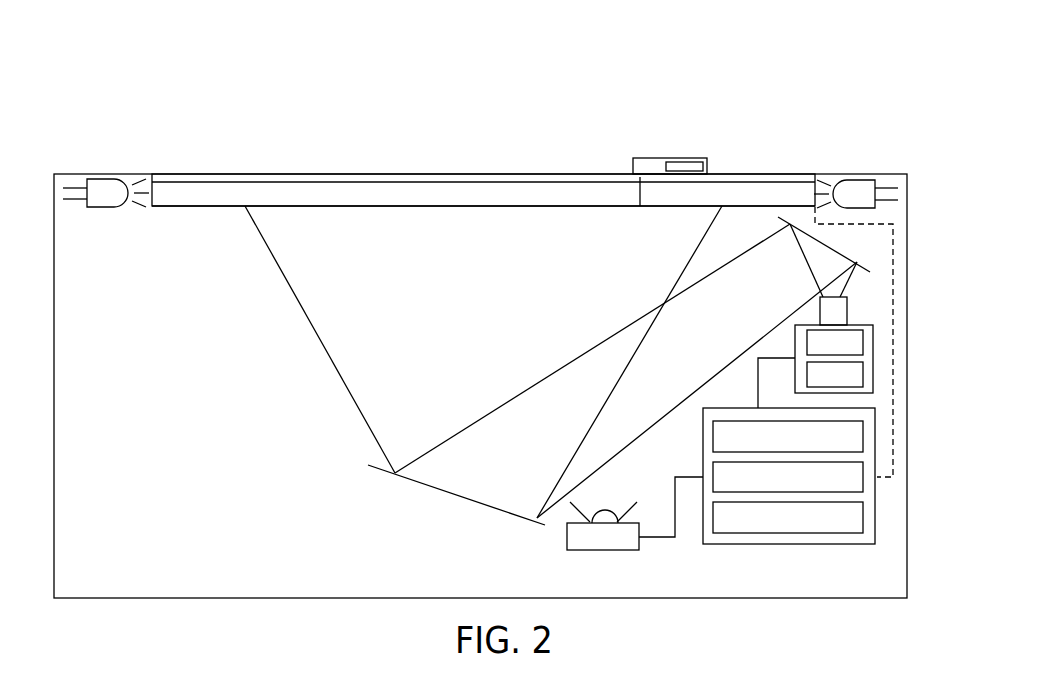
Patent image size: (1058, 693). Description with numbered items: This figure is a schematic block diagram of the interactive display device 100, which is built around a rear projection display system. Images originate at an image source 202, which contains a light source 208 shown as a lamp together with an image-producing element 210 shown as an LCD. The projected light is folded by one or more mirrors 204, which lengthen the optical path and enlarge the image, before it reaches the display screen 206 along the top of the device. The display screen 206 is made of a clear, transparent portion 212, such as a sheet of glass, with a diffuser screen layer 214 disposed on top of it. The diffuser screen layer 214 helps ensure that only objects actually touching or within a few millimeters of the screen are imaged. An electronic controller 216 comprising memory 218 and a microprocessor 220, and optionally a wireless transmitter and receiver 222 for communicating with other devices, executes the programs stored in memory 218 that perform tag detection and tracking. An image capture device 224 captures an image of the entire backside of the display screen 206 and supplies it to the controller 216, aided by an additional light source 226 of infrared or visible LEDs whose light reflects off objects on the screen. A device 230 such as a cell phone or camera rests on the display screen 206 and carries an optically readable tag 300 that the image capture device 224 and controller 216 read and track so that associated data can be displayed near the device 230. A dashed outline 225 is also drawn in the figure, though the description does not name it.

The interactive display device 100 is at (211, 89).
The display screen 206 is at (274, 170).
The diffuser screen layer 214 is at (350, 180).
The clear, transparent portion 212 is at (317, 197).
The light source 226 is at (101, 178).
The device 230 is at (652, 165).
The optically readable tag 300 is at (641, 177).
The projector housing 225 is at (895, 281).
The mirrors 204 is at (830, 252).
The image source 202 is at (873, 355).
The image-producing element 210 is at (863, 342).
The light source 208 is at (863, 375).
The electronic controller 216 is at (725, 545).
The memory 218 is at (863, 433).
The microprocessor 220 is at (863, 480).
The wireless transmitter and receiver 222 is at (788, 534).
The image capture device 224 is at (603, 538).